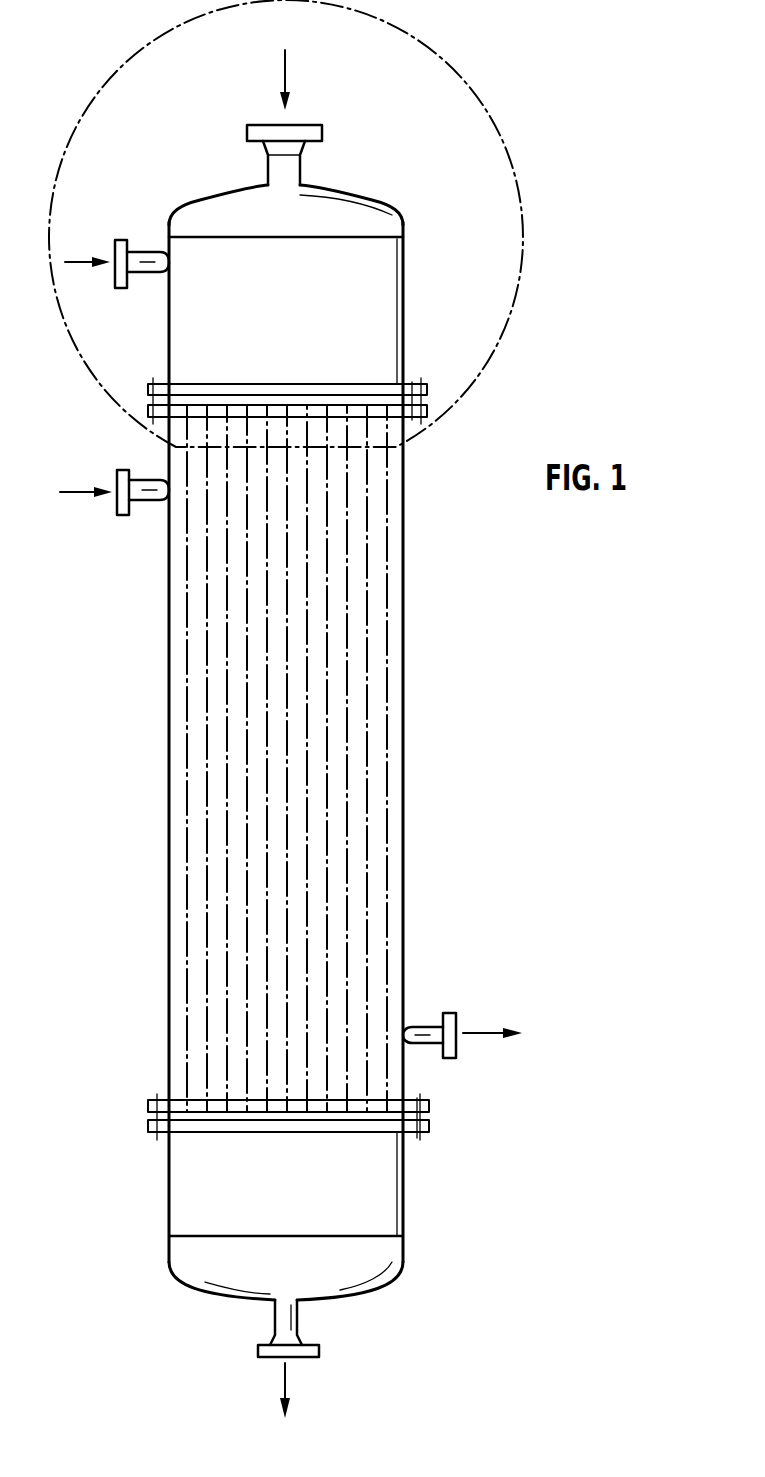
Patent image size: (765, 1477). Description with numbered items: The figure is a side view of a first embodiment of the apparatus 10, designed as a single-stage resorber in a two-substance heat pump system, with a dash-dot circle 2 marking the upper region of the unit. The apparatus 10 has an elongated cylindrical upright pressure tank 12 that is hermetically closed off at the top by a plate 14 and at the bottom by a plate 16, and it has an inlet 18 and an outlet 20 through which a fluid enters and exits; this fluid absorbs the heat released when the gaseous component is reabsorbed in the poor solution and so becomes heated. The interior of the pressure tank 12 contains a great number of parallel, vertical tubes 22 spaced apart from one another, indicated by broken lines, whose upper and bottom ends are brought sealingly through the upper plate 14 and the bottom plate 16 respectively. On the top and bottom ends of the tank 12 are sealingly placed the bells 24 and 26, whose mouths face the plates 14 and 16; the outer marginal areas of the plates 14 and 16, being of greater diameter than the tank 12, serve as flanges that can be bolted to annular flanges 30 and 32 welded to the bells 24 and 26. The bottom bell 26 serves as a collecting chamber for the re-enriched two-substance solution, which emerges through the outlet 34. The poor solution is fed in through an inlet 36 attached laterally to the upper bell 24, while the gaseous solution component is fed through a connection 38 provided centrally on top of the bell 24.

The enlarged detail region (dash-dot circle) 2 is at (520, 298).
The apparatus 10 is at (300, 741).
The pressure tank 12 is at (172, 872).
The upper plate 14 is at (150, 410).
The bottom plate 16 is at (158, 1098).
The inlet 18 is at (143, 493).
The outlet 20 is at (418, 1027).
The tubes 22 is at (265, 763).
The upper bell 24 is at (397, 267).
The bottom bell 26 is at (175, 1183).
The annular flange 30 is at (412, 382).
The annular flange 32 is at (417, 1132).
The outlet 34 is at (300, 1320).
The inlet 36 is at (148, 253).
The connection 38 is at (300, 166).